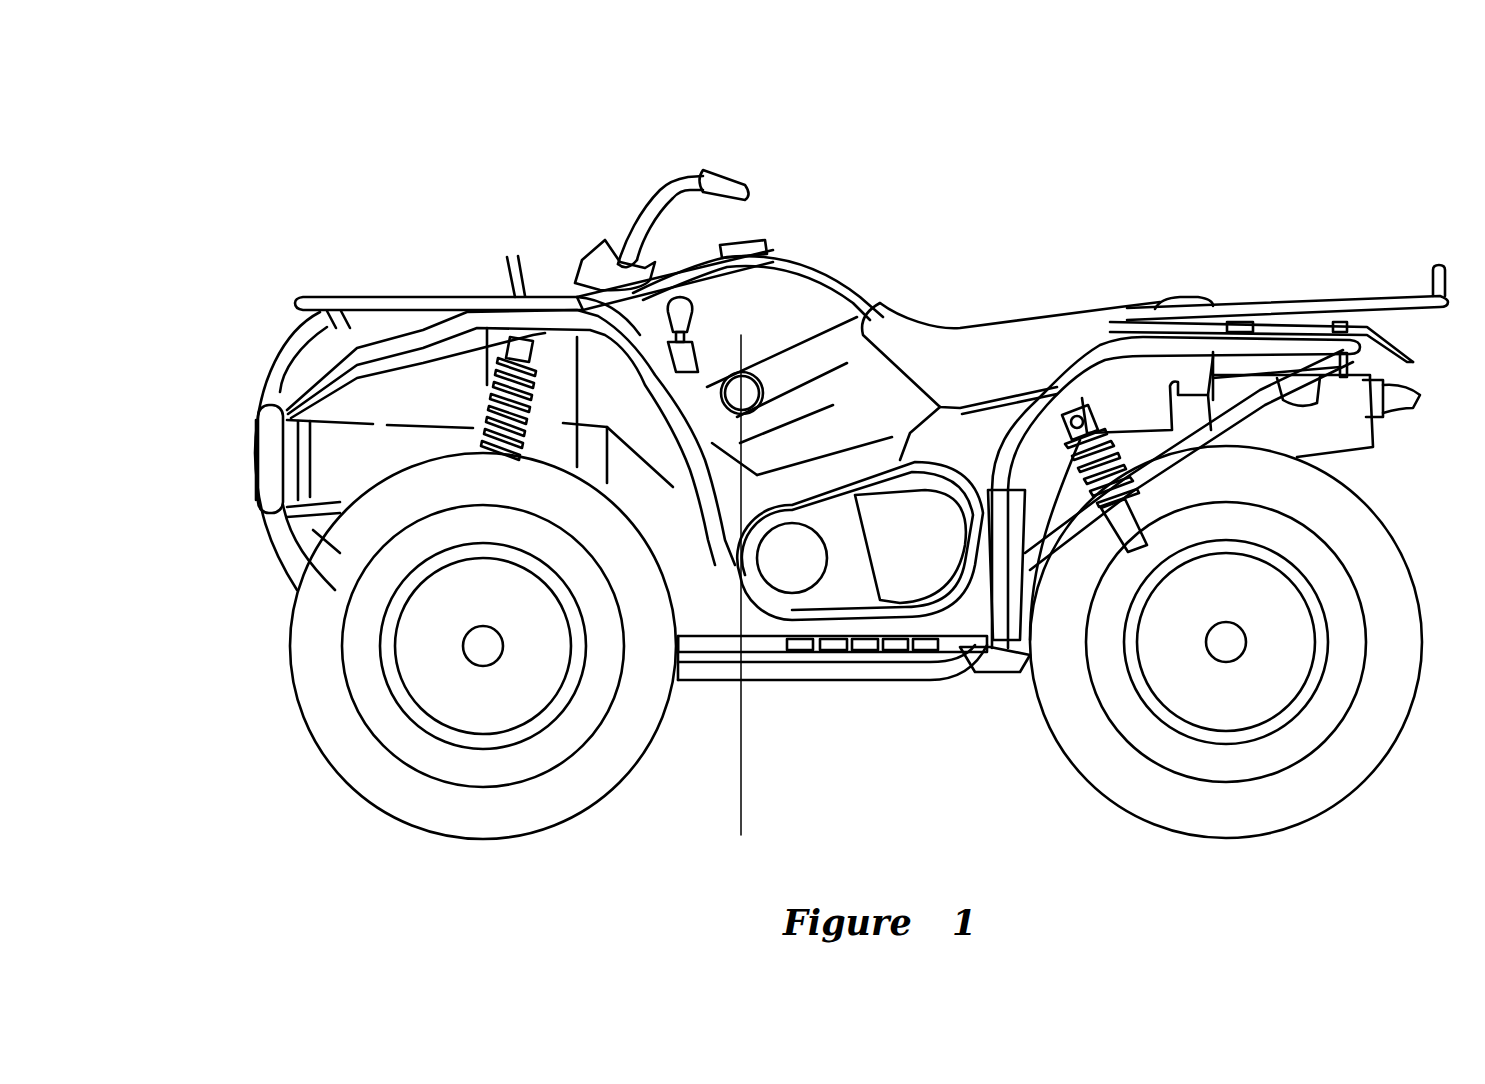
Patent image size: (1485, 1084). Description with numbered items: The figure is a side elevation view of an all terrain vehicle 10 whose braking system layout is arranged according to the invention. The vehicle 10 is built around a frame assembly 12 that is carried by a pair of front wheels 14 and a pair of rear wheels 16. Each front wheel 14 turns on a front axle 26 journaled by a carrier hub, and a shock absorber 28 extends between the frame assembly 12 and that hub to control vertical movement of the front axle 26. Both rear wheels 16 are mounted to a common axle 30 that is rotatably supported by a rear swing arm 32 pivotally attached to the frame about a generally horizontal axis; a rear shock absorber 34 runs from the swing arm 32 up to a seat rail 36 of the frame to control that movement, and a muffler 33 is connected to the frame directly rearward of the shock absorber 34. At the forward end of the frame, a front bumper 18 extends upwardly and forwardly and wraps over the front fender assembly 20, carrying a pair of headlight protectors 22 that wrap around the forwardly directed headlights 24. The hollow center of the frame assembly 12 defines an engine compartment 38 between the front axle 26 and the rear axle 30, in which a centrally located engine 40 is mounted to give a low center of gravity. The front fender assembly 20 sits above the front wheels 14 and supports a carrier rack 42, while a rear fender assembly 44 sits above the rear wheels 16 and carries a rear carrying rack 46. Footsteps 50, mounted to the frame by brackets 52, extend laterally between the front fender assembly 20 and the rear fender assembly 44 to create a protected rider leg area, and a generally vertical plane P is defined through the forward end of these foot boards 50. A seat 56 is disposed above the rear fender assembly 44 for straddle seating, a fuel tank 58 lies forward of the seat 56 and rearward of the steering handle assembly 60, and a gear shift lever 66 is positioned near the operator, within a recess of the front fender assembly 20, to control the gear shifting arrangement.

The vehicle 10 is at (1024, 224).
The frame assembly 12 is at (850, 493).
The front wheels 14 is at (652, 748).
The rear wheels 16 is at (1392, 735).
The front bumper 18 is at (258, 492).
The front fender assembly 20 is at (633, 335).
The headlight protectors 22 is at (265, 408).
The headlights 24 is at (405, 423).
The front axle 26 is at (483, 658).
The shock absorber 28 is at (497, 397).
The axle 30 is at (1224, 652).
The rear swing arm 32 is at (1016, 688).
The muffler 33 is at (1392, 445).
The shock absorber 34 is at (1120, 448).
The seat rail 36 is at (1268, 365).
The engine compartment 38 is at (860, 625).
The engine 40 is at (780, 590).
The carrier rack 42 is at (428, 293).
The rear fender assembly 44 is at (1100, 345).
The rear carrying rack 46 is at (1328, 316).
The footsteps 50 is at (928, 625).
The brackets 52 is at (790, 665).
The seat 56 is at (1000, 320).
The fuel tank 58 is at (830, 272).
The steering handle assembly 60 is at (738, 180).
The gear shift lever 66 is at (696, 318).
The vertical plane P is at (738, 822).